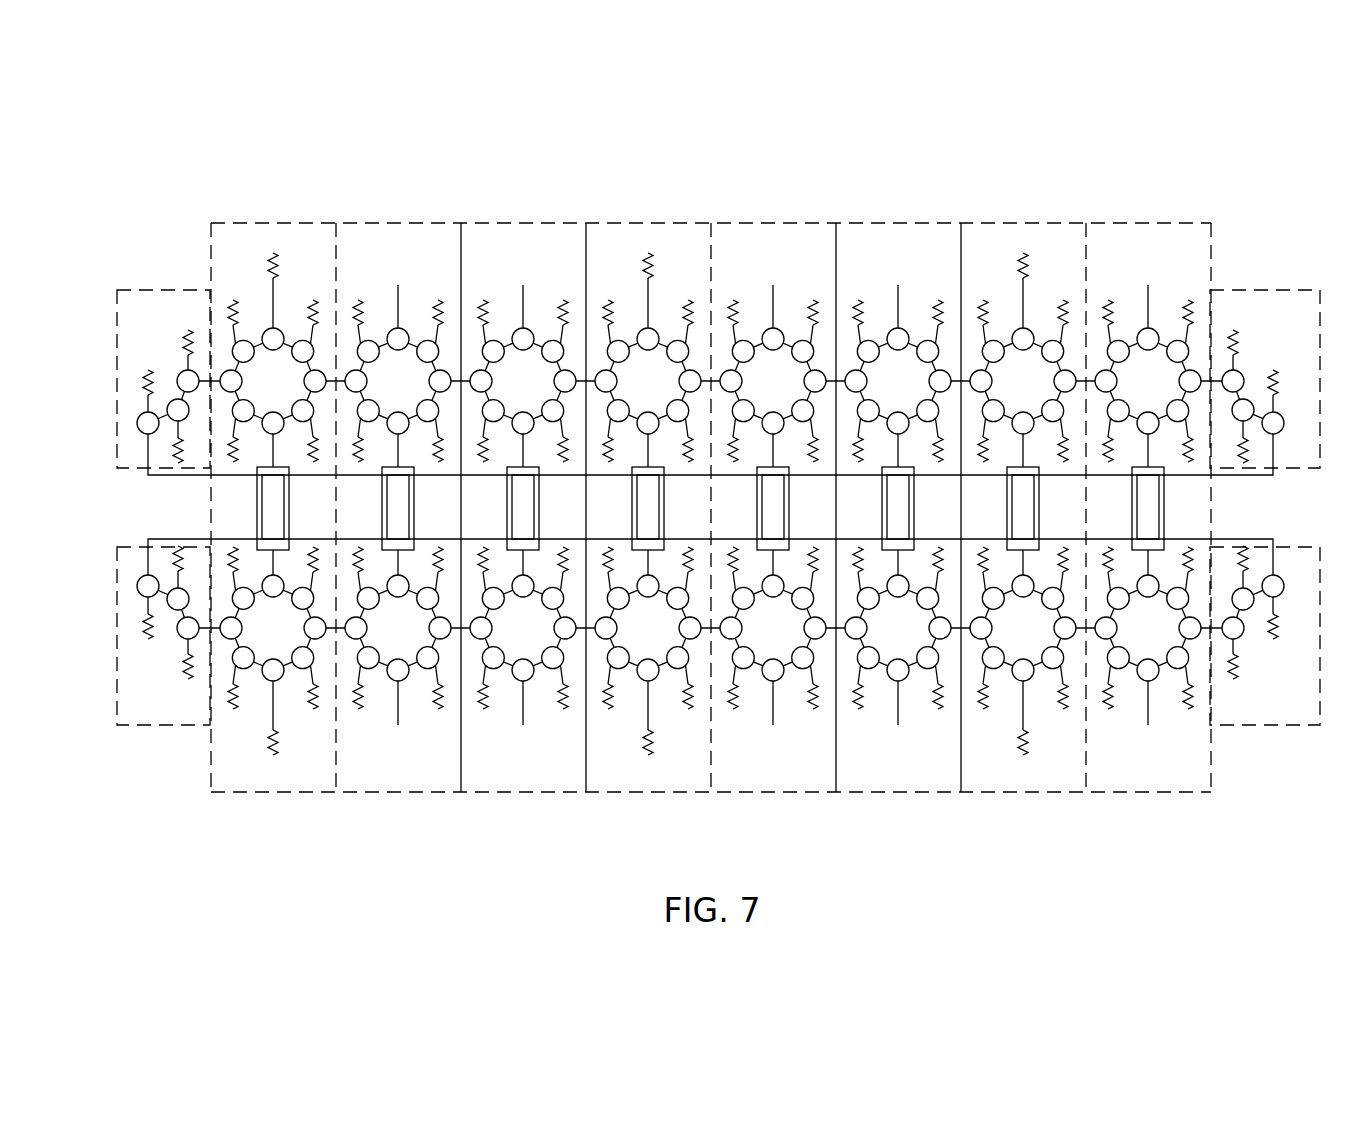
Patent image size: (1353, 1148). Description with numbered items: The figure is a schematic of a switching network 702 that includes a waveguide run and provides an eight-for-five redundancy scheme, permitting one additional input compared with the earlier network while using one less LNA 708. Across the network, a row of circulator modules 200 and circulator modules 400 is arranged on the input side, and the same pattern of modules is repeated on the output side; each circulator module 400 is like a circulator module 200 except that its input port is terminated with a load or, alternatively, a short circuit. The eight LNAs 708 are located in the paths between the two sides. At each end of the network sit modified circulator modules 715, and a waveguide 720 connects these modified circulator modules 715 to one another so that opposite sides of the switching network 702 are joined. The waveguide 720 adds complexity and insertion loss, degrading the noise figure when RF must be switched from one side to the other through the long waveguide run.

The switching network 702 is at (1224, 132).
The circulator module 200 is at (773, 510).
The circulator module 400 is at (648, 510).
The LNA 708 is at (256, 508).
The modified circulator module 715 is at (718, 509).
The waveguide 720 is at (160, 475).